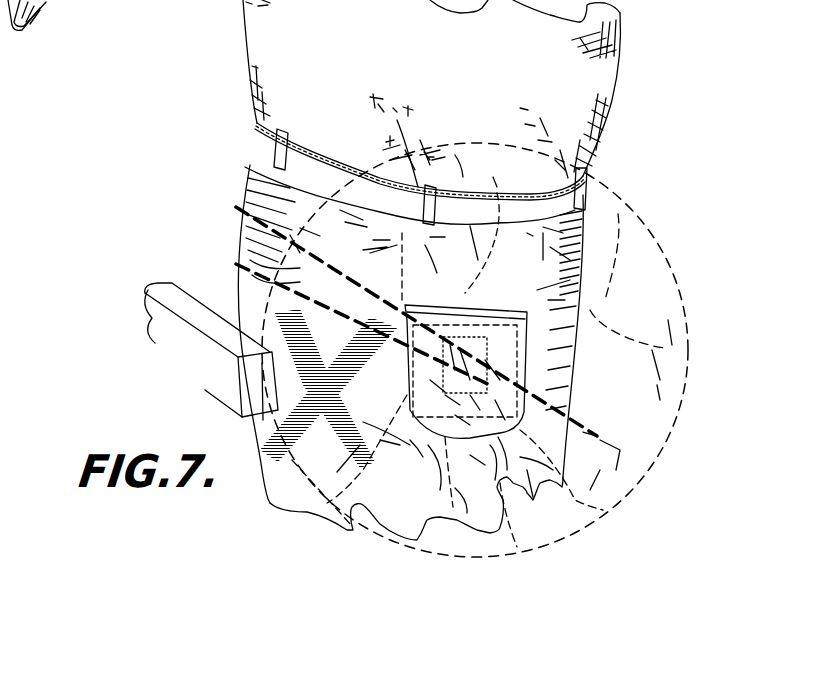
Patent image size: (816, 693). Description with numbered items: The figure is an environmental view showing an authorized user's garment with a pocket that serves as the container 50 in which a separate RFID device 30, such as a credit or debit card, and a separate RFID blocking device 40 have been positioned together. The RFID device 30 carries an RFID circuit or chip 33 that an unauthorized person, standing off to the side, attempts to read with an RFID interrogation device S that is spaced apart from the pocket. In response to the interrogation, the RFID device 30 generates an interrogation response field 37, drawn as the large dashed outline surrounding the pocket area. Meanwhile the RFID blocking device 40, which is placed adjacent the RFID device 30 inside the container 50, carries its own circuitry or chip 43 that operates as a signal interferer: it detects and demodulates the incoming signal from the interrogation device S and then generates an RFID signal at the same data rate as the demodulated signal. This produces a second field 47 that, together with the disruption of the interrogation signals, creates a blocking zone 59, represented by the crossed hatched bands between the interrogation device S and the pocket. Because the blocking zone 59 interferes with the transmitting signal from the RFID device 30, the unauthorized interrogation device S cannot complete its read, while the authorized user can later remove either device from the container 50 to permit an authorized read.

The RFID interrogation device S is at (165, 292).
The RFID device 30 is at (348, 395).
The RFID circuit or chip 33 is at (600, 436).
The interrogation response field 37 is at (577, 530).
The RFID blocking device 40 is at (397, 315).
The circuitry or chip 43 is at (343, 319).
The second field 47 is at (293, 405).
The container 50 is at (500, 345).
The blocking zone 59 is at (348, 325).